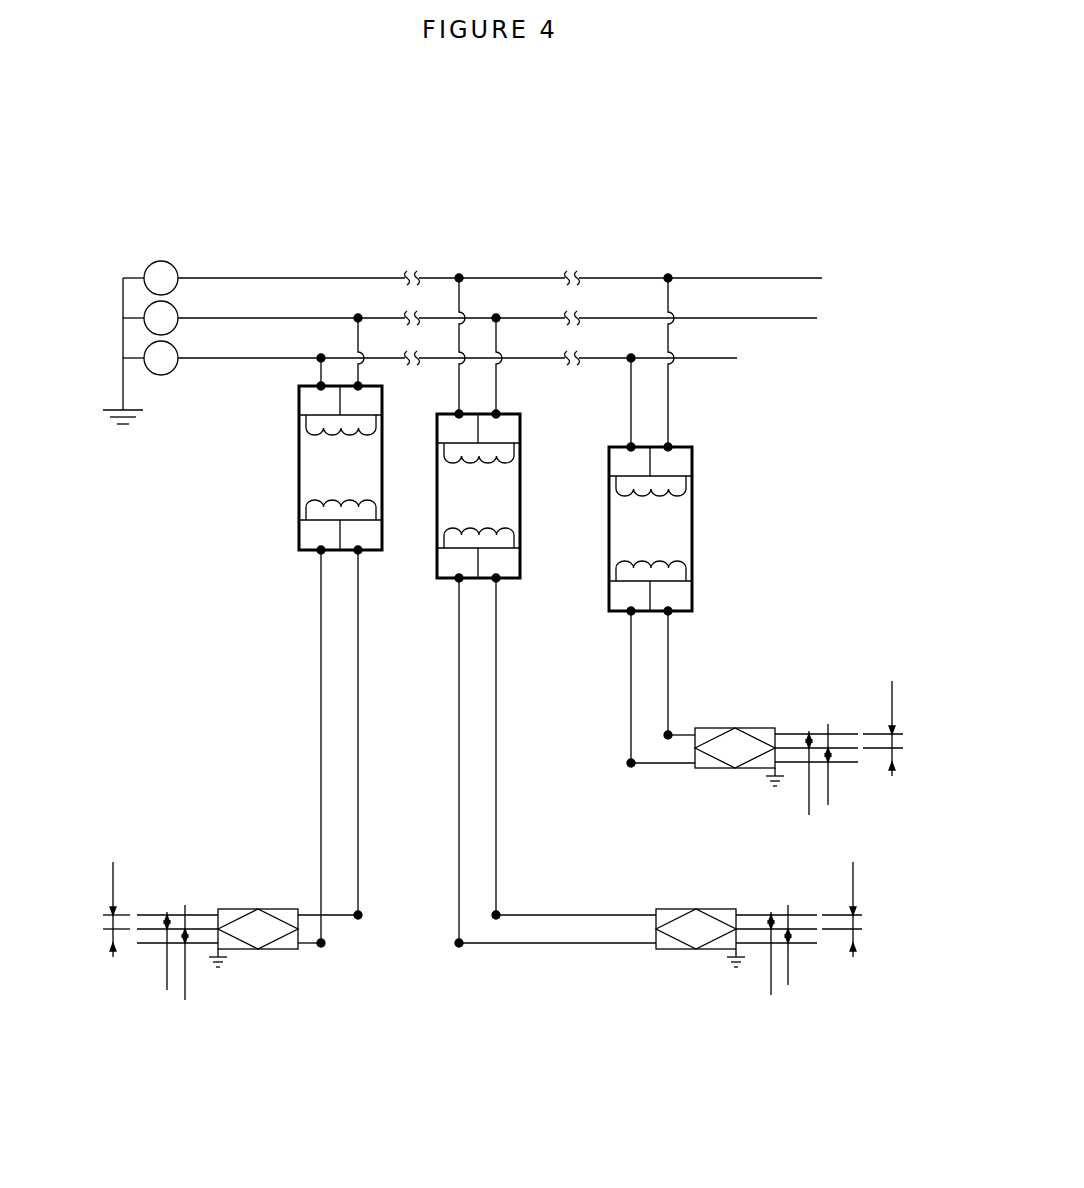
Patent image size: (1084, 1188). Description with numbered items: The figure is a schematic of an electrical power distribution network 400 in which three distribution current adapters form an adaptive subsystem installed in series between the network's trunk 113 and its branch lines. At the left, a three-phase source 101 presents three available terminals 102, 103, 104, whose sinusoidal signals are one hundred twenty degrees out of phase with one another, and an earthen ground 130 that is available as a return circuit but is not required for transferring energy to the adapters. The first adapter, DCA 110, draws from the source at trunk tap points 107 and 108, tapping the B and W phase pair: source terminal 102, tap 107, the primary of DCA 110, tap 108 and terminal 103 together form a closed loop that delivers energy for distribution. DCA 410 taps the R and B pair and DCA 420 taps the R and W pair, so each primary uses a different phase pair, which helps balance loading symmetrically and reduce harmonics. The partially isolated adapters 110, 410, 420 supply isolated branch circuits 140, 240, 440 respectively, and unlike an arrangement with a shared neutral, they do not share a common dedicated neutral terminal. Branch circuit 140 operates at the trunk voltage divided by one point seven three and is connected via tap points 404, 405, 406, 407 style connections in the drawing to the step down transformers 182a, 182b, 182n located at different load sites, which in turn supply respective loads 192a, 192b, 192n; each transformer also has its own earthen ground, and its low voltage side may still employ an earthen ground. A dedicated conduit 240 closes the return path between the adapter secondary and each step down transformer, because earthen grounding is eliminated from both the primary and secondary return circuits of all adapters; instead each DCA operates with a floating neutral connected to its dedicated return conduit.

The electrical power distribution network 400 is at (740, 176).
The source 101 is at (108, 268).
The source terminal 102 is at (183, 365).
The source terminal 103 is at (183, 273).
The source terminal 104 is at (183, 313).
The trunk tap point 107 is at (359, 316).
The trunk tap point 108 is at (321, 356).
The DCA 110 is at (316, 470).
The trunk 113 is at (746, 258).
The earthen ground 130 is at (120, 435).
The branch circuit 140 is at (353, 627).
The step down transformer 182a is at (260, 908).
The step down transformer 182b is at (703, 907).
The step down transformer 182n is at (735, 727).
The load 192a is at (112, 978).
The load 192b is at (820, 985).
The load 192n is at (870, 808).
The dedicated conduit 240 is at (508, 708).
The connection from R phase to DCA2 404 is at (462, 276).
The connection from B phase to DCA2 405 is at (498, 316).
The connection from R phase to DCA3 406 is at (672, 290).
The connection from W phase to DCA3 407 is at (637, 367).
The DCA 410 is at (503, 497).
The DCA 420 is at (680, 540).
The branch line 440 is at (677, 680).